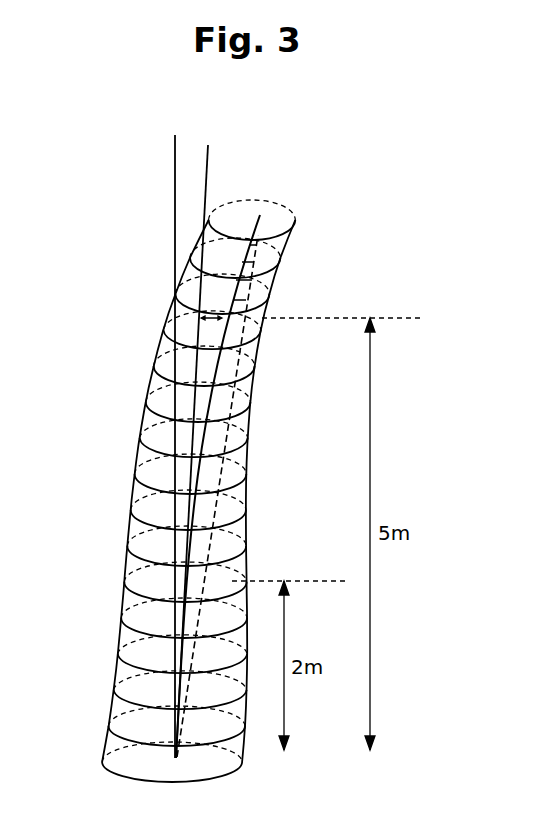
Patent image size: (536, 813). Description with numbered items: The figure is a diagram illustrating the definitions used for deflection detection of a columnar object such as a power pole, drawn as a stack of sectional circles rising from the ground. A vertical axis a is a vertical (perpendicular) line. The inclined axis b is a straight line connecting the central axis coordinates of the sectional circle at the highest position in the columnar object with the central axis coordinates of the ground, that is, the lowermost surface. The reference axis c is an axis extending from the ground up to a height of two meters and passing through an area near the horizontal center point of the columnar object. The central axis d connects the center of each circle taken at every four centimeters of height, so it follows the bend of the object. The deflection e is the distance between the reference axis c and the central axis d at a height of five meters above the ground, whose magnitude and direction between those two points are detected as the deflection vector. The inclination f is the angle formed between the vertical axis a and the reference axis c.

The vertical axis a is at (175, 196).
The inclined axis b is at (293, 246).
The reference axis c is at (207, 162).
The central axis d is at (260, 212).
The deflection e is at (262, 287).
The inclination f is at (134, 505).